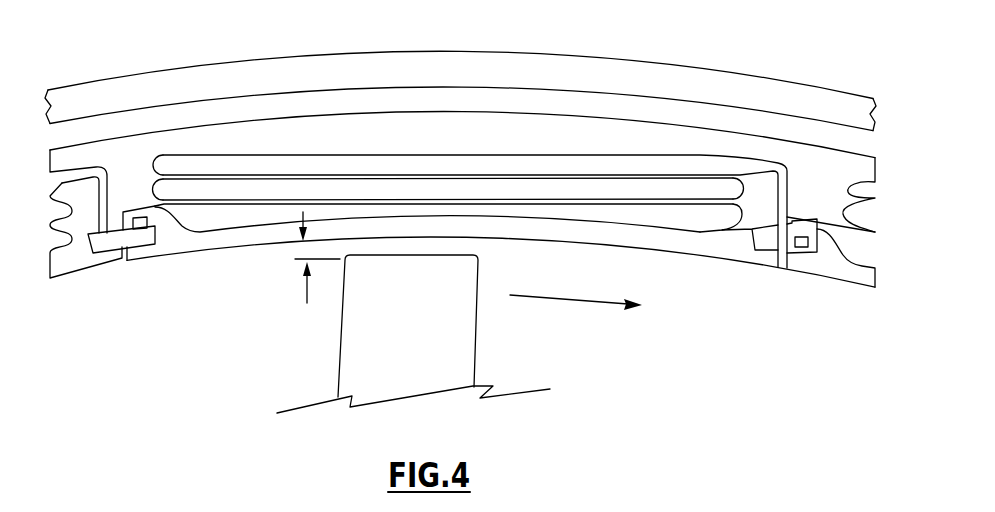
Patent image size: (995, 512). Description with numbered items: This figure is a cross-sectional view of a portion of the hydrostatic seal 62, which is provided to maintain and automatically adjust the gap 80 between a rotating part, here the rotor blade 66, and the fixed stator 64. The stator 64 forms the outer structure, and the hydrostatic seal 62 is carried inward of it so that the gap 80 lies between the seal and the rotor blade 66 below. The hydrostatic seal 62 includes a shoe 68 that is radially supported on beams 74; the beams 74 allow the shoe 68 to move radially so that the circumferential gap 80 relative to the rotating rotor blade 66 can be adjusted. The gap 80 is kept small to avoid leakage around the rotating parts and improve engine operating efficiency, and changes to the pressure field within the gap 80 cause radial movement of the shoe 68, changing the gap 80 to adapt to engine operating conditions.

The hydrostatic seal 62 is at (178, 285).
The stator 64 is at (503, 66).
The rotor blade 66 is at (428, 344).
The shoe 68 is at (667, 242).
The beams 74 is at (620, 205).
The gap 80 is at (307, 297).